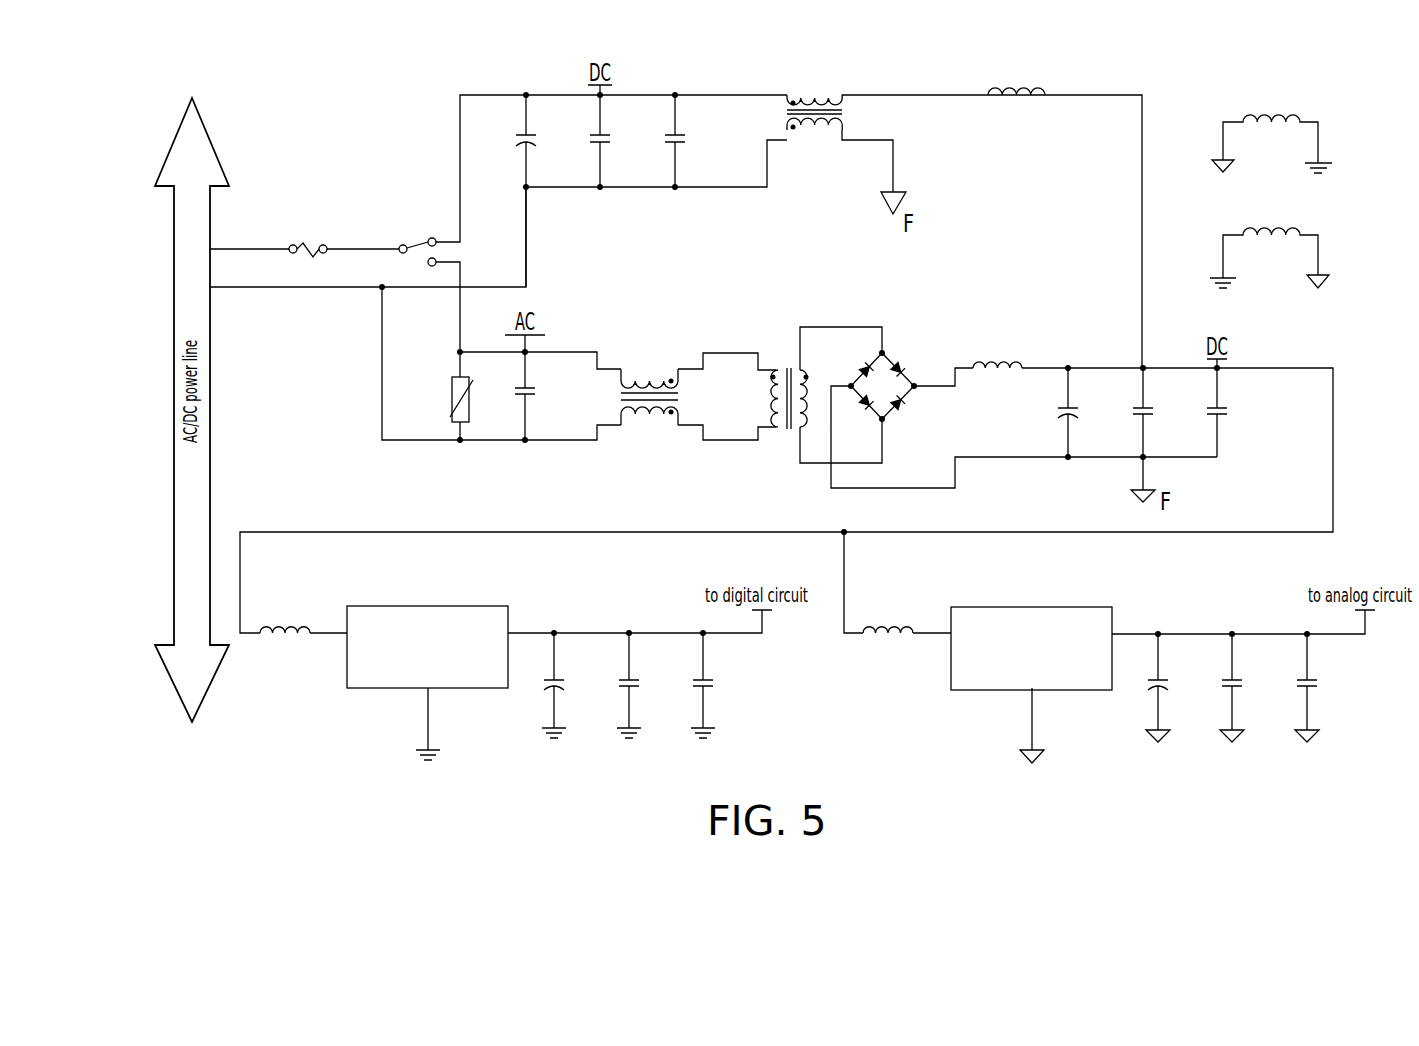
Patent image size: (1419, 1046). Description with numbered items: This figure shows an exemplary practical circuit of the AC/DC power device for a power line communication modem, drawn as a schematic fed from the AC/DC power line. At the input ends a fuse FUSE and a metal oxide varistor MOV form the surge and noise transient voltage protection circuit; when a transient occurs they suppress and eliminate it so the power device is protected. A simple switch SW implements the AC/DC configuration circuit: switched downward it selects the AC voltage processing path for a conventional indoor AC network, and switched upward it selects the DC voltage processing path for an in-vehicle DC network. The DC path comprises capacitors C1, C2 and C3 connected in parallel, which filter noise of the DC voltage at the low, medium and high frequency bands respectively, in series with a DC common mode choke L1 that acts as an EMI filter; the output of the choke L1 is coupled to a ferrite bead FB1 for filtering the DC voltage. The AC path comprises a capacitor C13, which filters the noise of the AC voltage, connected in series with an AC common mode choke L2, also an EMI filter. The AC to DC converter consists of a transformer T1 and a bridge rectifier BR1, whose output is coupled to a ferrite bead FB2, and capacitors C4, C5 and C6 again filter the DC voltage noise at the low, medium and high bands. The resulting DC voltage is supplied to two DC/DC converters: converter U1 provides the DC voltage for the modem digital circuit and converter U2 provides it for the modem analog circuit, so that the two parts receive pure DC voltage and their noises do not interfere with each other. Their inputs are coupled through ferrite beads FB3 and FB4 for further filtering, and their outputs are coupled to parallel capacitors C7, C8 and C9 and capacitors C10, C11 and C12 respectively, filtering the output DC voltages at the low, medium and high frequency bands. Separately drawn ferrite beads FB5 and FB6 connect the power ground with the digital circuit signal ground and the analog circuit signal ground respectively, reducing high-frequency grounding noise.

The fuse FUSE is at (308, 233).
The switch SW is at (417, 238).
The metal oxide varistor MOV is at (443, 396).
The capacitor C1 is at (549, 191).
The capacitor C2 is at (623, 141).
The capacitor C3 is at (704, 141).
The common mode choke L1 is at (879, 104).
The ferrite bead FB1 is at (1016, 112).
The ferrite bead FB5 is at (1272, 153).
The ferrite bead FB6 is at (1269, 258).
The capacitor C13 is at (551, 396).
The common mode choke L2 is at (649, 383).
The transformer T1 is at (794, 384).
The bridge rectifier BR1 is at (886, 389).
The ferrite bead FB2 is at (997, 384).
The capacitor C4 is at (1092, 412).
The capacitor C5 is at (1166, 412).
The capacitor C6 is at (1247, 412).
The ferrite bead FB3 is at (285, 646).
The DC/DC converter U1 is at (430, 658).
The capacitor C7 is at (576, 685).
The capacitor C8 is at (651, 685).
The capacitor C9 is at (731, 685).
The ferrite bead FB4 is at (888, 646).
The DC/DC converter U2 is at (1034, 659).
The capacitor C10 is at (1181, 688).
The capacitor C11 is at (1255, 688).
The capacitor C12 is at (1336, 688).